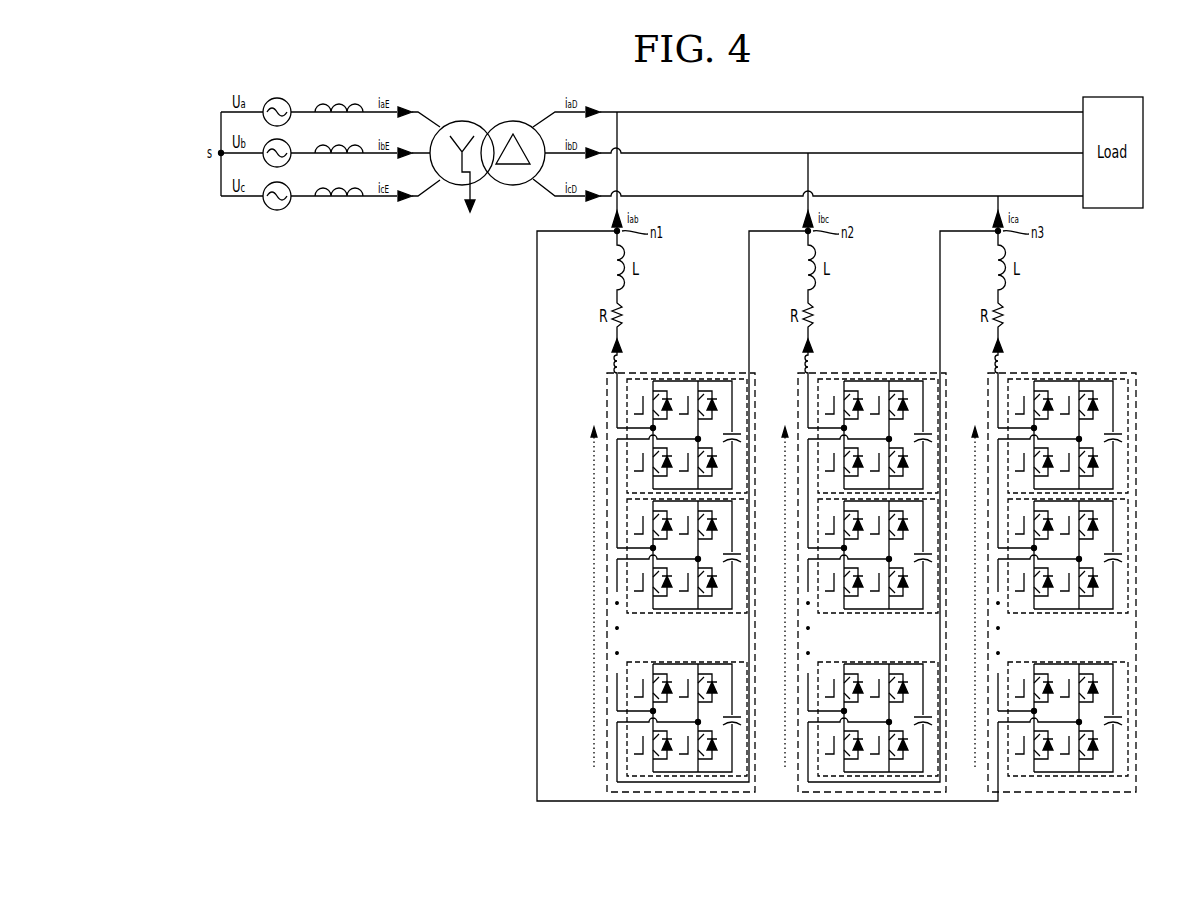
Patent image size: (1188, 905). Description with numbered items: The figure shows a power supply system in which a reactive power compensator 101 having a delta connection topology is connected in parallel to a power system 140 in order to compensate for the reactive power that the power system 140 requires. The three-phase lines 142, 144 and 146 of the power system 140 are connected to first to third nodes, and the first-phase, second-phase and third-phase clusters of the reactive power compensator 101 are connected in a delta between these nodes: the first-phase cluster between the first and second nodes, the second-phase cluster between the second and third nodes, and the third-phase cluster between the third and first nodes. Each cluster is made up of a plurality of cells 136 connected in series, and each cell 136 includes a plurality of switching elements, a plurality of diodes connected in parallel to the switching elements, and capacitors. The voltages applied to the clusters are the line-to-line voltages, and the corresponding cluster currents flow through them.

The reactive power compensator 101 is at (520, 298).
The cell 136 is at (626, 400).
The power system 140 is at (958, 70).
The first three-phase line 142 is at (845, 112).
The second three-phase line 144 is at (893, 153).
The third three-phase line 146 is at (940, 196).